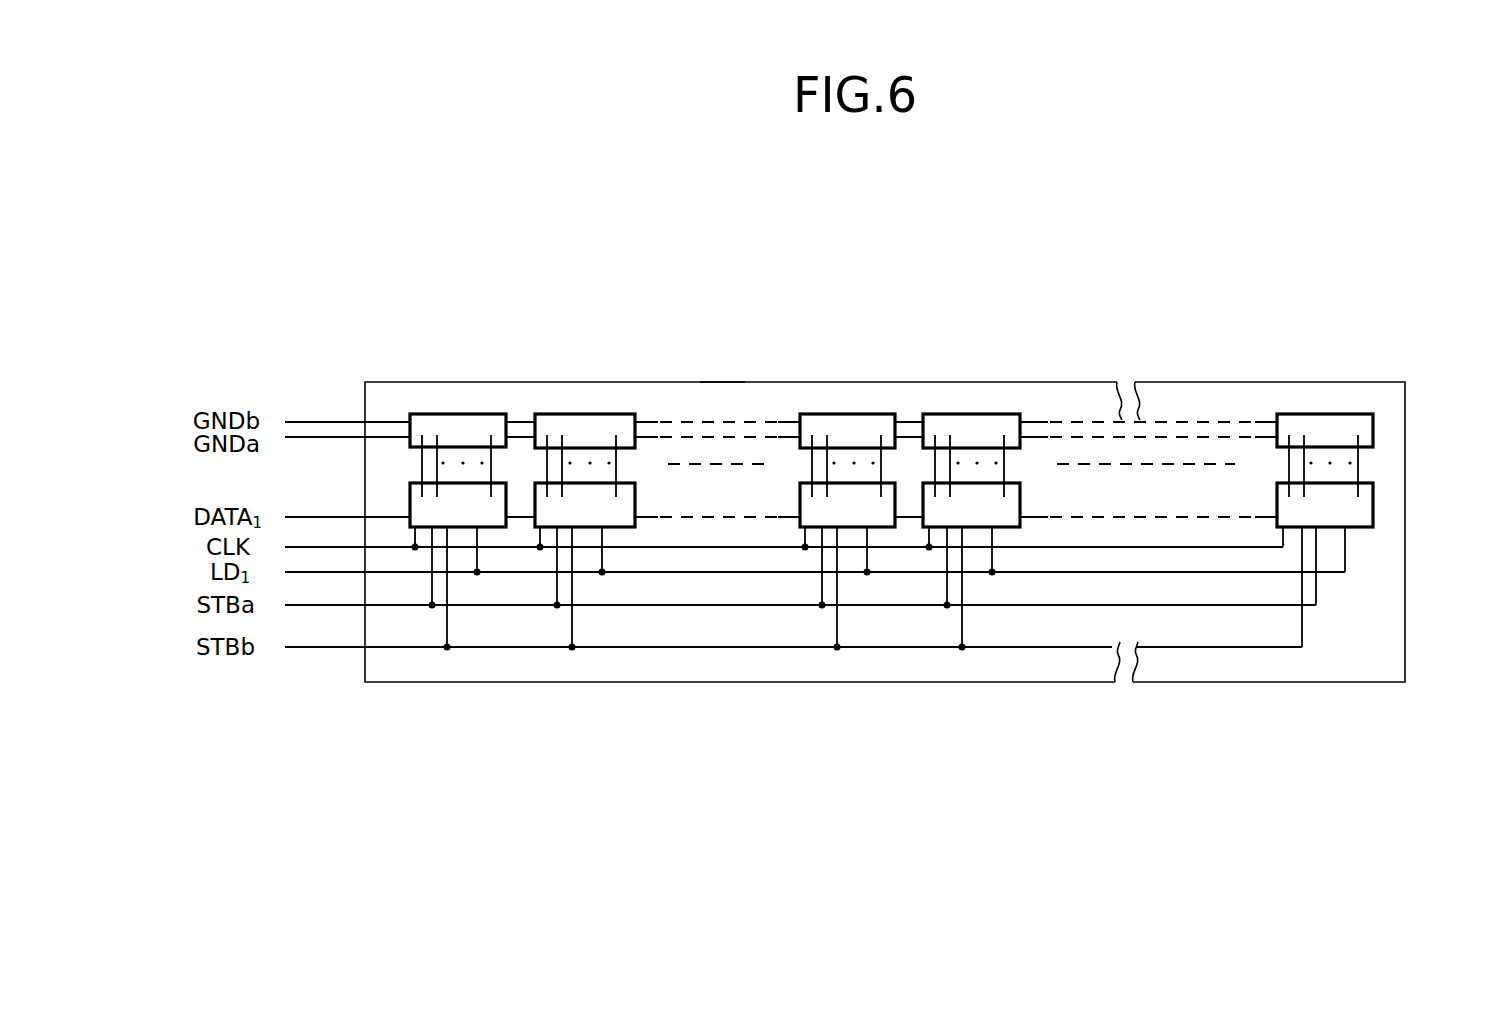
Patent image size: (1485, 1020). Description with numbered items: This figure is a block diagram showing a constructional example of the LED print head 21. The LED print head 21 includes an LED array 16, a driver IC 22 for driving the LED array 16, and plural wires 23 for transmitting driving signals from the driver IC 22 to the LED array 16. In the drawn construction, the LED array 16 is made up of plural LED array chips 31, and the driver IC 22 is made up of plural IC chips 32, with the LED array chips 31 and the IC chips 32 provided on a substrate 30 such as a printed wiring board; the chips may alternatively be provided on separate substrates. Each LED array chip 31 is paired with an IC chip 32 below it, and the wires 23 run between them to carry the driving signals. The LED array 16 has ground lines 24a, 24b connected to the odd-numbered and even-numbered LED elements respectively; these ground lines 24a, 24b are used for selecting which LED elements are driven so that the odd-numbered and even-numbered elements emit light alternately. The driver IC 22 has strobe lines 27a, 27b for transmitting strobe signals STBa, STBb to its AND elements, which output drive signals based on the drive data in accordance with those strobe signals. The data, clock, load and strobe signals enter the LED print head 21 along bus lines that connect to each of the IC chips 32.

The LED array 16 is at (1380, 430).
The LED print head 21 is at (1405, 388).
The driver IC 22 is at (1380, 498).
The wires 23 is at (1376, 462).
The ground line 24a is at (355, 437).
The ground line 24b is at (326, 422).
The strobe line 27a is at (357, 605).
The strobe line 27b is at (324, 647).
The substrate 30 is at (722, 382).
The LED array chips 31 is at (455, 414).
The IC chips 32 is at (410, 496).